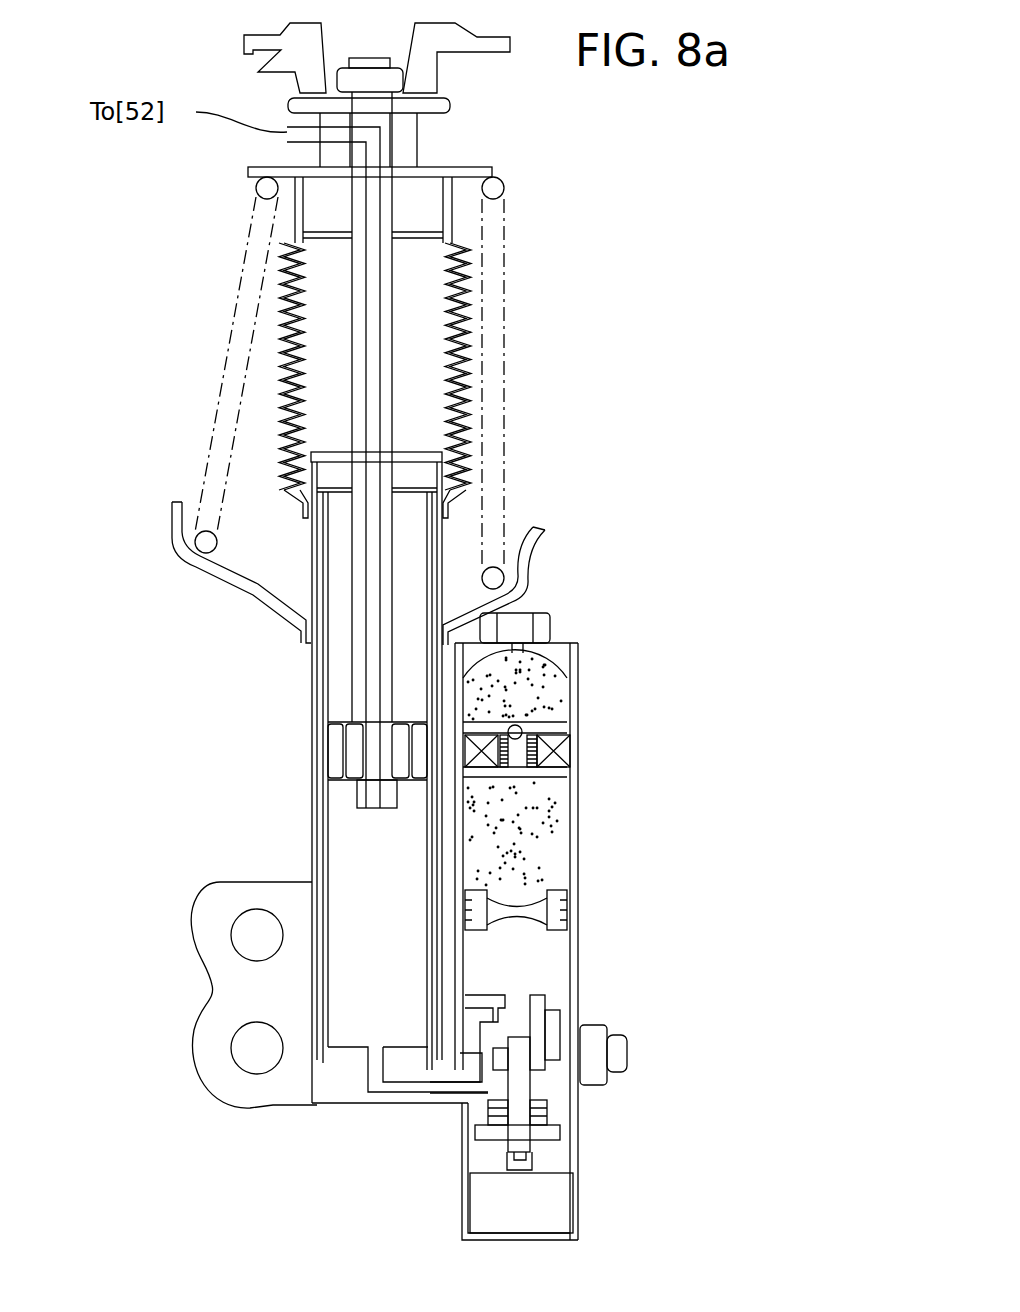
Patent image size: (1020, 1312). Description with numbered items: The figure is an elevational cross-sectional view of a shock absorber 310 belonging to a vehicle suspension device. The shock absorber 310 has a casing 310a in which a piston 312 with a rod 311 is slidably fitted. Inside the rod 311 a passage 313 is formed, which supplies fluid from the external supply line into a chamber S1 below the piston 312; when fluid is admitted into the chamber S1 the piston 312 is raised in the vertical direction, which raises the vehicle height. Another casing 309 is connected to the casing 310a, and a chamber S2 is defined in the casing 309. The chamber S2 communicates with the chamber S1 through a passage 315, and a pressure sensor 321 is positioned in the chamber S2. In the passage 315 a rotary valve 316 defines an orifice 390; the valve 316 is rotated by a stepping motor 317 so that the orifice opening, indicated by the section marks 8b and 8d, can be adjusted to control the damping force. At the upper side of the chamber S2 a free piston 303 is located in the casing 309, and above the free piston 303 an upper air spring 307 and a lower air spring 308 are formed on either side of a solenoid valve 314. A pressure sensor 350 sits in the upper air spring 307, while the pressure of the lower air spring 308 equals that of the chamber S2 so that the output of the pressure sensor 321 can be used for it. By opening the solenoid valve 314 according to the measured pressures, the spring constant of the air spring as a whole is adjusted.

The passage 313 is at (370, 287).
The rod 311 is at (395, 360).
The pressure sensor 350 is at (515, 632).
The upper air spring 307 is at (548, 697).
The solenoid valve 314 is at (517, 763).
The lower air spring 308 is at (545, 858).
The free piston 303 is at (555, 912).
The chamber S2 is at (548, 965).
The orifice 390 is at (515, 1040).
The pressure sensor 321 is at (620, 1050).
The rotary valve 316 is at (535, 1062).
The stepping motor 317 is at (548, 1203).
The casing 309 is at (462, 1223).
The passage 315 is at (400, 1085).
The chamber S1 is at (350, 1022).
The piston 312 is at (358, 768).
The casing 310a is at (318, 692).
The shock absorber 310 is at (270, 982).
The passage 8b is at (376, 941).
The passage 8d is at (516, 1000).